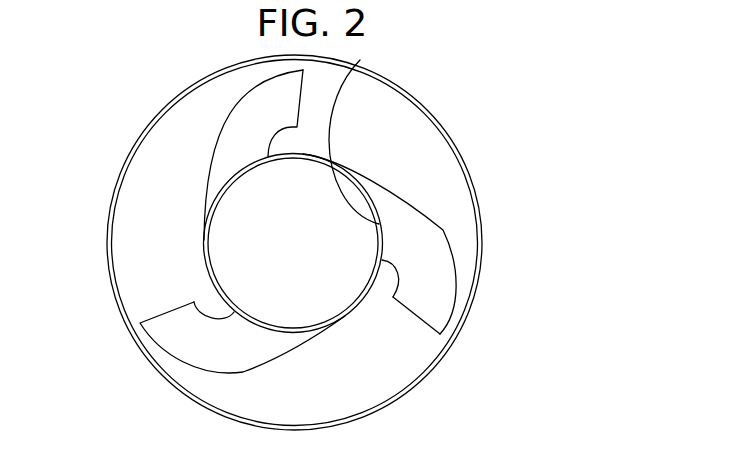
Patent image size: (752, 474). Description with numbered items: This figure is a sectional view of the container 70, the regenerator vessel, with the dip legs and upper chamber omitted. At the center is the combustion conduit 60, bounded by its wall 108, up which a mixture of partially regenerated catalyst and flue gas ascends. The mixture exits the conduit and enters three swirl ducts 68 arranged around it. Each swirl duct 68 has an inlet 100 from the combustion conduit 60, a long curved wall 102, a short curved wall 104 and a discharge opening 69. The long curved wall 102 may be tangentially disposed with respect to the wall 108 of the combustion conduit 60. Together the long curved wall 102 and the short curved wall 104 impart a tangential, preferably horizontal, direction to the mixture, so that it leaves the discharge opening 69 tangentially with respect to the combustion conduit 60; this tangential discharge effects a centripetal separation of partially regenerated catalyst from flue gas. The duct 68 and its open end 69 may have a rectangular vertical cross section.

The combustion conduit 60 is at (340, 335).
The swirl duct 68 is at (495, 294).
The discharge opening 69 is at (420, 317).
The container 70 is at (455, 128).
The inlet 100 is at (360, 60).
The long curved wall 102 is at (443, 230).
The short curved wall 104 is at (397, 278).
The wall of the combustion conduit 108 is at (205, 260).